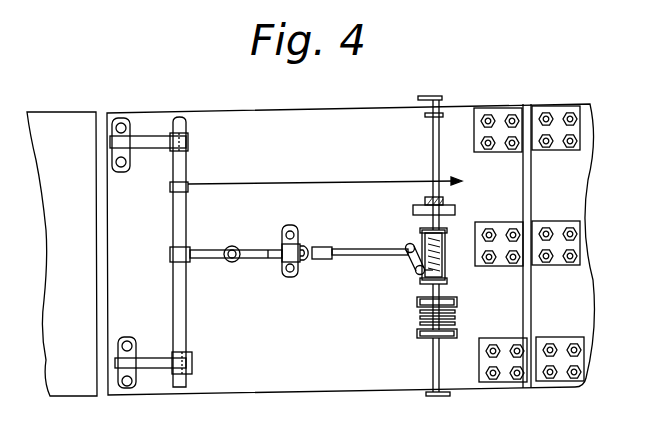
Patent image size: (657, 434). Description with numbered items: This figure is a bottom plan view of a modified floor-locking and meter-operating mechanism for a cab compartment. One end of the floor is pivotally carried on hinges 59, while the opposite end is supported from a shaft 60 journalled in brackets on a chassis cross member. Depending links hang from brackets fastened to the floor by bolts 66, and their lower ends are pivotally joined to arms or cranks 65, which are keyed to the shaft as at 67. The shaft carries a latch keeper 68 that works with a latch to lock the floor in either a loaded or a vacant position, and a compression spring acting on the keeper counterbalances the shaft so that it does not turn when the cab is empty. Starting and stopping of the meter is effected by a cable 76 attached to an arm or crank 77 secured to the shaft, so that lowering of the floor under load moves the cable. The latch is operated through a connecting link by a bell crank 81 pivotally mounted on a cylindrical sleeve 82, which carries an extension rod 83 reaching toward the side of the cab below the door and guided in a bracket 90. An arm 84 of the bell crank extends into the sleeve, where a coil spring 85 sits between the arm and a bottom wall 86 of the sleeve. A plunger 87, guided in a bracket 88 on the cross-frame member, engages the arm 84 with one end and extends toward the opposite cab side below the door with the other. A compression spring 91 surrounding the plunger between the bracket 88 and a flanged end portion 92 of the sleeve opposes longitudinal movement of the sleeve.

The hinges 59 is at (557, 112).
The shaft 60 is at (186, 165).
The arms or cranks 65 is at (150, 138).
The bolts 66 is at (122, 124).
The keying of cranks to shaft 67 is at (188, 140).
The latch keeper 68 is at (246, 251).
The cable 76 is at (323, 182).
The arm or crank 77 is at (178, 190).
The bell crank 81 is at (408, 256).
The cylindrical sleeve 82 is at (442, 281).
The extension rod 83 is at (432, 150).
The arm of bell crank 84 is at (422, 276).
The coil spring 85 is at (448, 231).
The bottom wall 86 is at (421, 234).
The plunger 87 is at (433, 357).
The bracket 88 is at (418, 334).
The bracket 90 is at (413, 208).
The compression spring 91 is at (456, 318).
The flanged end portion 92 is at (418, 302).